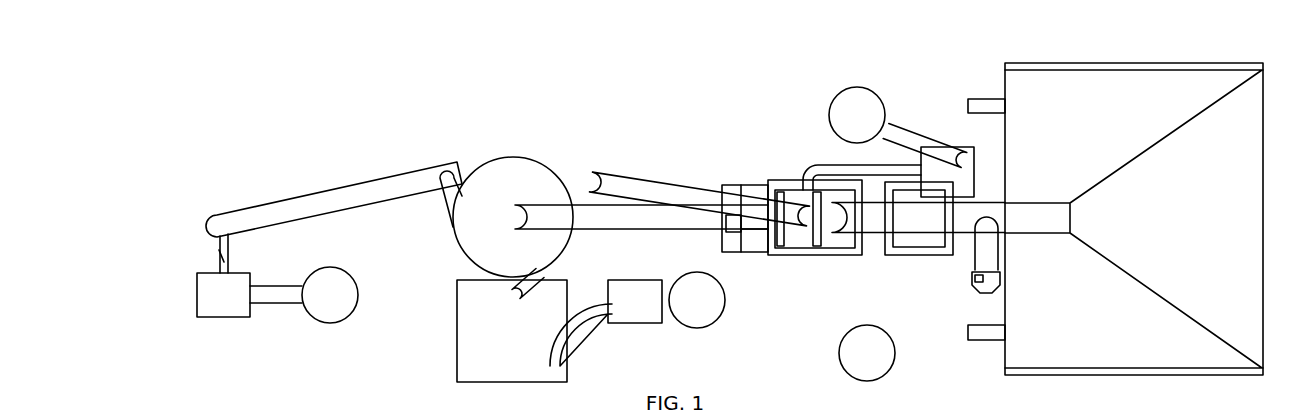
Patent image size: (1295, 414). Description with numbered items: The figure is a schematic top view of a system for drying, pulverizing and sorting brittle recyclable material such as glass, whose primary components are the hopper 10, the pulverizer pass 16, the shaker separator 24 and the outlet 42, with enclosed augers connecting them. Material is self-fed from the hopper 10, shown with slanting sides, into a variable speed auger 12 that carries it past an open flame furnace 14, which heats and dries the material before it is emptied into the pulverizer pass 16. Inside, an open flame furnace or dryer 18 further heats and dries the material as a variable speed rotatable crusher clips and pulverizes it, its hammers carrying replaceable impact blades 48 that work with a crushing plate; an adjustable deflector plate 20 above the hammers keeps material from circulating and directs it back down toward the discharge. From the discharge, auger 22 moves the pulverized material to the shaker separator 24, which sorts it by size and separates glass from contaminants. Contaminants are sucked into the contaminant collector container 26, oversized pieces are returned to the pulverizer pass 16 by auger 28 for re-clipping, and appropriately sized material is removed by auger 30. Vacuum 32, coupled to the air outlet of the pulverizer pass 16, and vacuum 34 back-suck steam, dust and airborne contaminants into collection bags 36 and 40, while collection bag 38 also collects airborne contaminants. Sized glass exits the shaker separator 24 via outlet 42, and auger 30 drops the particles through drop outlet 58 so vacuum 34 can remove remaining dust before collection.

The hopper 10 is at (1107, 103).
The variable speed auger 12 is at (873, 222).
The open flame furnace 14 is at (977, 253).
The pulverizer pass 16 is at (843, 242).
The open flame furnace or dryer 18 is at (732, 231).
The adjustable deflector plate 20 is at (772, 233).
The auger 22 is at (618, 217).
The shaker separator 24 is at (502, 178).
The contaminant collector container 26 is at (457, 343).
The auger 28 is at (657, 188).
The auger 30 is at (310, 200).
The vacuum 32 is at (807, 215).
The vacuum 34 is at (213, 238).
The collection bag 36 is at (867, 102).
The collection bag 38 is at (703, 303).
The collection bag 40 is at (323, 300).
The outlet 42 is at (448, 187).
The replaceable impact blade 48 is at (778, 240).
The drop outlet 58 is at (229, 263).